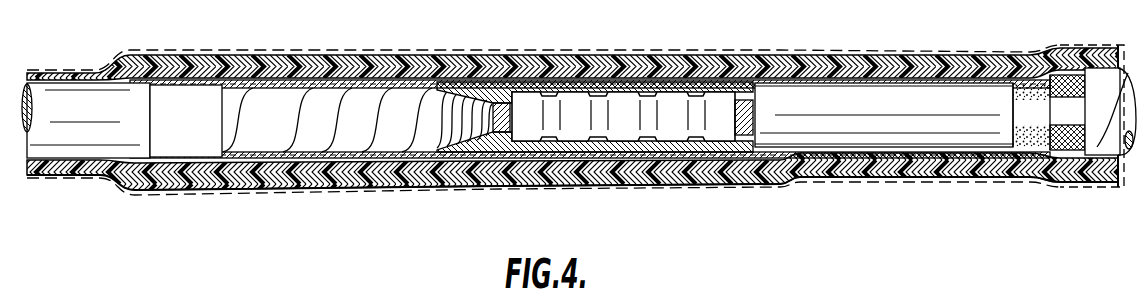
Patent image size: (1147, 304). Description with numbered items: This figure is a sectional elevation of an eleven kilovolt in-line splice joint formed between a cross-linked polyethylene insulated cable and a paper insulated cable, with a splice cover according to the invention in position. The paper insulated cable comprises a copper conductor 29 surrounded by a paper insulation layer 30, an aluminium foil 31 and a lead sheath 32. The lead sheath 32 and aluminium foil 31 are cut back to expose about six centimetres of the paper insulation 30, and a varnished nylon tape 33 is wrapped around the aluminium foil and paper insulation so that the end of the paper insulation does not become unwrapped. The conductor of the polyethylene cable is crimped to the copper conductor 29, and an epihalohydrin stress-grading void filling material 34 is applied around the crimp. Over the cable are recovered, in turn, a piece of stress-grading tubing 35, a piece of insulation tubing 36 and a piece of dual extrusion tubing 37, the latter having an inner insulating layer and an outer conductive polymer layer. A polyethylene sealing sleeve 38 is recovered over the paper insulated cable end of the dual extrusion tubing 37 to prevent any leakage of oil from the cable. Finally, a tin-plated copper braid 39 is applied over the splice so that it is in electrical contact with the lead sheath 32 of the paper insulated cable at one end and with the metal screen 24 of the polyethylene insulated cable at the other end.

The metal screen 24 is at (1107, 80).
The copper conductor 29 is at (503, 125).
The paper insulation layer 30 is at (367, 135).
The aluminium foil 31 is at (190, 128).
The lead sheath 32 is at (72, 135).
The varnished nylon tape 33 is at (380, 152).
The stress-grading void filling material 34 is at (557, 145).
The stress-grading tubing 35 is at (818, 153).
The insulation tubing 36 is at (632, 173).
The dual extrusion tubing 37 is at (698, 177).
The polyethylene sealing sleeve 38 is at (240, 190).
The tin-plated copper braid 39 is at (930, 182).